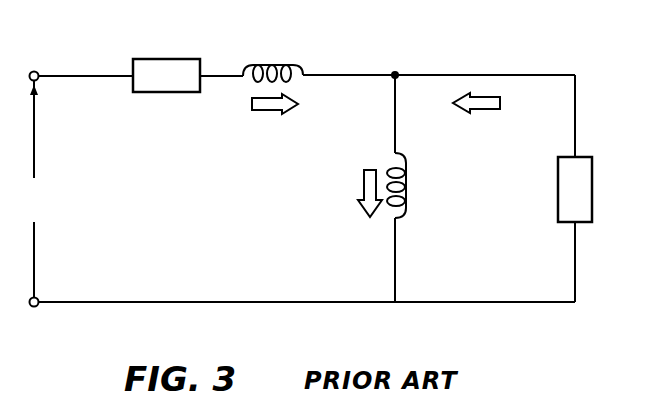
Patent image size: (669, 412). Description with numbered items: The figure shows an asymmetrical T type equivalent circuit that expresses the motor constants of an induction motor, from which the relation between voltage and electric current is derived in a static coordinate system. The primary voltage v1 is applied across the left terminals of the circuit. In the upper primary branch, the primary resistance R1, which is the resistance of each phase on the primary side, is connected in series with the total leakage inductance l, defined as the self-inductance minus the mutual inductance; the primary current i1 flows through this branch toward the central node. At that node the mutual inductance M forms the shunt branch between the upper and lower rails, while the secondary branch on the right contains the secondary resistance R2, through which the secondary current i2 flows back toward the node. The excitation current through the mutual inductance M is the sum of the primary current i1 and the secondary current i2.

The primary resistance R1 is at (166, 54).
The total leakage inductance l is at (273, 56).
The primary current i1 is at (257, 115).
The secondary current i2 is at (491, 110).
The mutual inductance M is at (410, 185).
The secondary resistance R2 is at (592, 189).
The primary voltage v1 is at (41, 152).